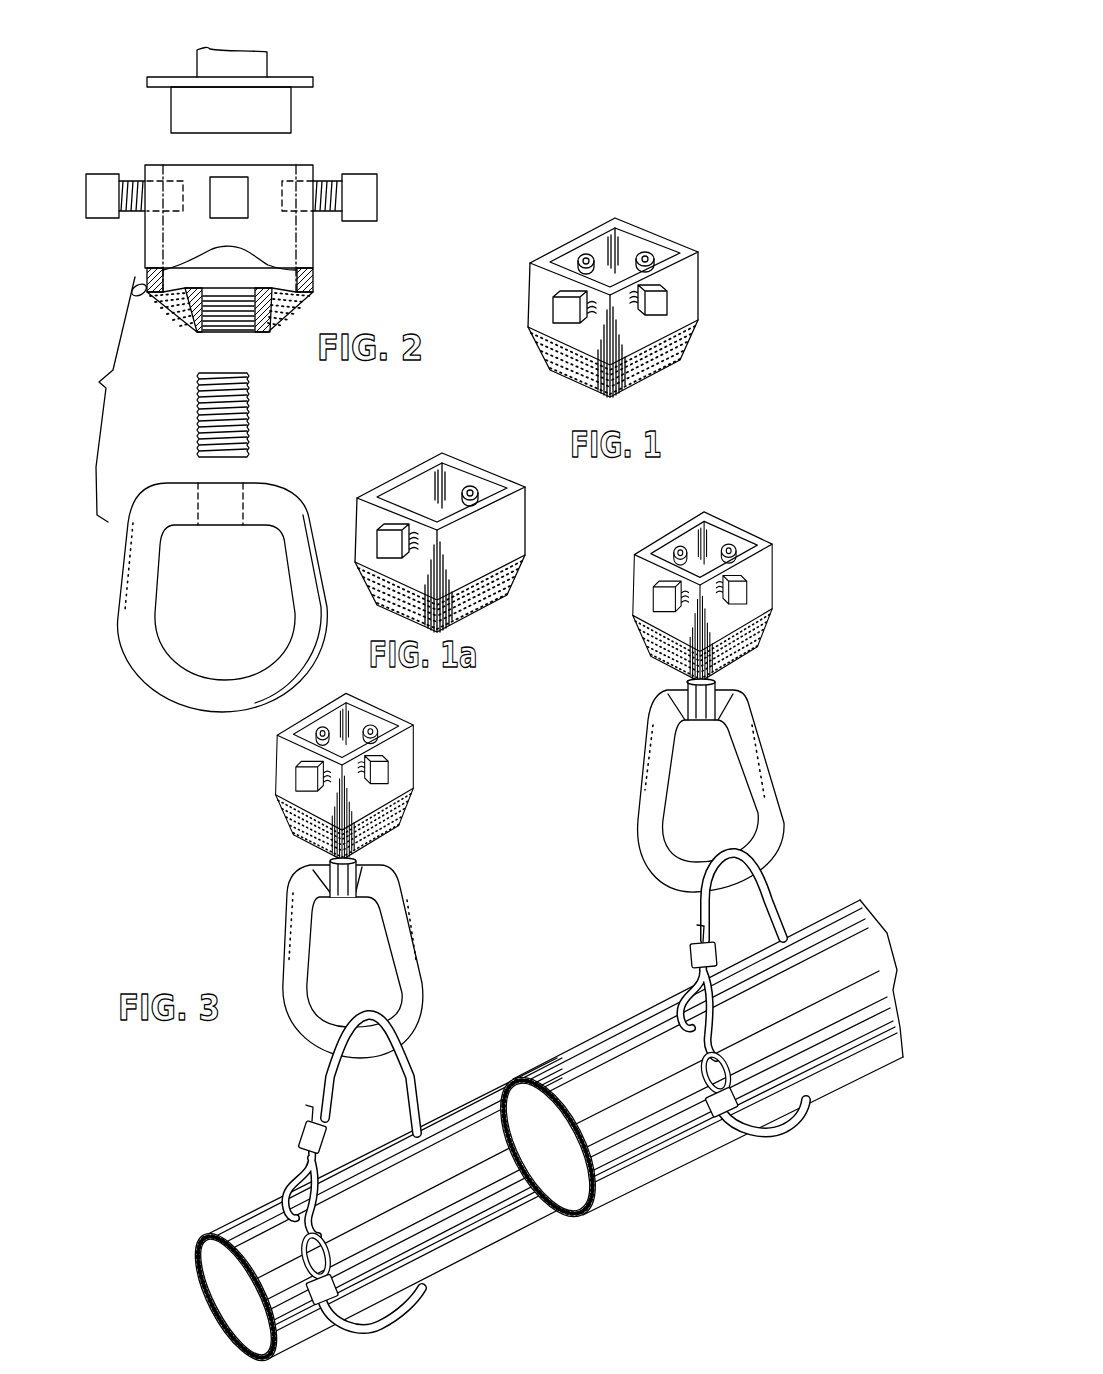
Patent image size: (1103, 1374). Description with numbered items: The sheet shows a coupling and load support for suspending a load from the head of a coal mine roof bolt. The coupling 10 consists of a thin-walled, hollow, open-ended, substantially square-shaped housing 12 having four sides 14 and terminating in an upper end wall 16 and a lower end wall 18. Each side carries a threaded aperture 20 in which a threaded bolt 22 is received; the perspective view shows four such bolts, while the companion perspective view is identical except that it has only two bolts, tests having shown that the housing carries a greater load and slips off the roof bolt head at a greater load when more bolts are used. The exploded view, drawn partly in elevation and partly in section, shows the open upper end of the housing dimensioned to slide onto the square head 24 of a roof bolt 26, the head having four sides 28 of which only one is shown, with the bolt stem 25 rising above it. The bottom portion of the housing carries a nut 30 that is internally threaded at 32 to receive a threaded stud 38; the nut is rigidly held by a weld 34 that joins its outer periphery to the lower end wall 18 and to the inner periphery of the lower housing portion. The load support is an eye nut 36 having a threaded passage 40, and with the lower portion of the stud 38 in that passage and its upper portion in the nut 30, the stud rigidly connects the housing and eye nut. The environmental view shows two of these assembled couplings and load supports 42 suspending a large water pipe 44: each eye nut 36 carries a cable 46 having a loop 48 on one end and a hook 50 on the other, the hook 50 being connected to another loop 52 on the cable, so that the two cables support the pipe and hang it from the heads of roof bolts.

In FIG. 1, the coupling 10 is at (713, 258).
In FIG. 2, the housing 12 is at (323, 262).
In FIG. 1, the housing 12 is at (706, 312).
In FIG. 1A, the housing 12 is at (539, 535).
In FIG. 3, the housing 12 is at (777, 560).
In FIG. 2, the sides 14 is at (153, 232).
In FIG. 1, the sides 14 is at (612, 285).
In FIG. 1A, the sides 14 is at (448, 559).
In FIG. 3, the sides 14 is at (644, 595).
In FIG. 2, the upper end wall 16 is at (158, 193).
In FIG. 1, the upper end wall 16 is at (601, 245).
In FIG. 1A, the upper end wall 16 is at (452, 475).
In FIG. 3, the upper end wall 16 is at (720, 535).
In FIG. 2, the lower end wall 18 is at (165, 270).
In FIG. 2, the threaded aperture 20 is at (146, 180).
In FIG. 2, the threaded bolt 22 is at (97, 190).
In FIG. 1, the threaded bolt 22 is at (609, 304).
In FIG. 1A, the threaded bolt 22 is at (434, 494).
In FIG. 3, the threaded bolt 22 is at (734, 597).
In FIG. 2, the head 24 is at (225, 117).
In FIG. 2, the anchor stem 25 is at (215, 60).
In FIG. 2, the roof bolt 26 is at (199, 30).
In FIG. 2, the sides 28 is at (271, 100).
In FIG. 2, the nut 30 is at (268, 326).
In FIG. 2, the internal threads 32 is at (233, 310).
In FIG. 2, the weld 34 is at (171, 309).
In FIG. 1, the weld 34 is at (619, 358).
In FIG. 1A, the weld 34 is at (441, 595).
In FIG. 3, the weld 34 is at (740, 652).
In FIG. 2, the eye nut 36 is at (191, 597).
In FIG. 3, the eye nut 36 is at (292, 928).
In FIG. 2, the threaded stud 38 is at (210, 404).
In FIG. 2, the threaded passage 40 is at (215, 510).
In FIG. 2, the coupling and load support 42 is at (299, 403).
In FIG. 3, the coupling and load support 42 is at (286, 863).
In FIG. 3, the pipe 44 is at (513, 1213).
In FIG. 3, the cable 46 is at (327, 1080).
In FIG. 3, the loop 48 is at (302, 1145).
In FIG. 3, the hook 50 is at (280, 1197).
In FIG. 3, the loop 52 is at (306, 1270).